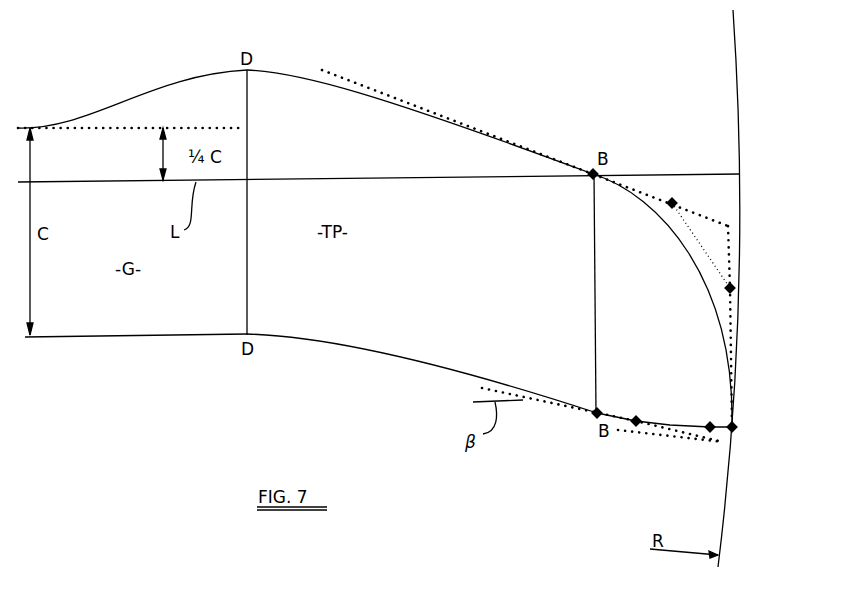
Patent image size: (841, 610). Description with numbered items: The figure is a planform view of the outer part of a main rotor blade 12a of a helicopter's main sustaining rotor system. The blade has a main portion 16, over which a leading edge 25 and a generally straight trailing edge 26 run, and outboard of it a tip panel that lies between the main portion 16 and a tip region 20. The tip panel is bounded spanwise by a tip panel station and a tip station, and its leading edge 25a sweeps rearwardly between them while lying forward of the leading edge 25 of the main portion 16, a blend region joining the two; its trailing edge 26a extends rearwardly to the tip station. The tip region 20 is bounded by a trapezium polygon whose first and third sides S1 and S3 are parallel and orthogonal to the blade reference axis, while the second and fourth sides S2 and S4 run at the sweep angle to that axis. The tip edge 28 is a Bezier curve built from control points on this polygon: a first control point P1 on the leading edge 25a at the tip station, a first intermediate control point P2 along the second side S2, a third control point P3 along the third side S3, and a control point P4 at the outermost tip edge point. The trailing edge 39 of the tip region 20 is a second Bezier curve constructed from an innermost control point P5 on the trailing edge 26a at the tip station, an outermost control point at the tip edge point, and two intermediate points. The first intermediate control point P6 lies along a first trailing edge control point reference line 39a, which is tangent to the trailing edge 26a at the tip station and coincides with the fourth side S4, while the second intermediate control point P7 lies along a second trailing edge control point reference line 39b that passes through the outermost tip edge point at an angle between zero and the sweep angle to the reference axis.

The leading edge of the main portion 25 is at (18, 128).
The main rotor blade 12a is at (285, 95).
The leading edge of the tip panel 25a is at (452, 120).
The tip region 20 is at (620, 207).
The tip edge 28 is at (688, 258).
The trailing edge of the main portion 26 is at (148, 337).
The trailing edge of the tip panel 26a is at (315, 338).
The trailing edge of the tip region 39 is at (668, 425).
The first trailing edge control point reference line 39a is at (698, 427).
The second trailing edge control point reference line 39b is at (645, 435).
The main portion 16 is at (67, 207).
The first side of the boundary polygon S1 is at (593, 283).
The second side of the boundary polygon S2 is at (703, 215).
The third side of the boundary polygon S3 is at (728, 320).
The fourth side of the boundary polygon S4 is at (670, 432).
The first control point P1 is at (585, 157).
The first intermediate control point P2 is at (675, 193).
The third control point P3 is at (745, 295).
The control point at the outermost tip edge point P4 is at (725, 440).
The spanwise innermost trailing edge control point P5 is at (590, 420).
The first intermediate trailing edge control point P6 is at (630, 430).
The second intermediate trailing edge control point P7 is at (707, 432).